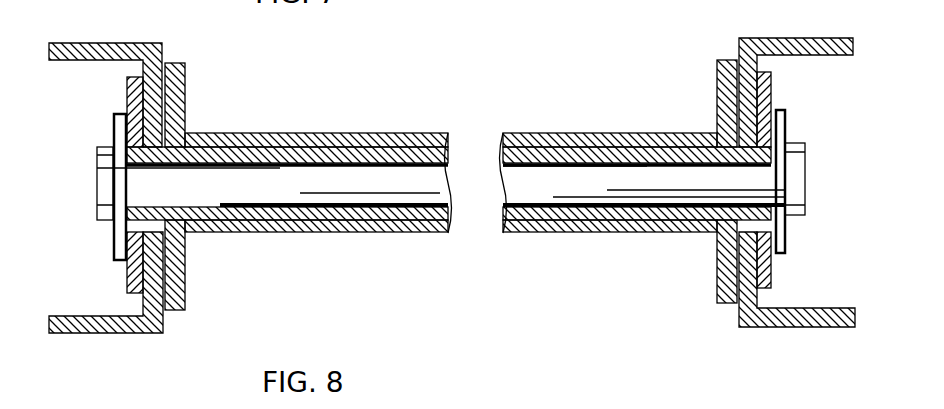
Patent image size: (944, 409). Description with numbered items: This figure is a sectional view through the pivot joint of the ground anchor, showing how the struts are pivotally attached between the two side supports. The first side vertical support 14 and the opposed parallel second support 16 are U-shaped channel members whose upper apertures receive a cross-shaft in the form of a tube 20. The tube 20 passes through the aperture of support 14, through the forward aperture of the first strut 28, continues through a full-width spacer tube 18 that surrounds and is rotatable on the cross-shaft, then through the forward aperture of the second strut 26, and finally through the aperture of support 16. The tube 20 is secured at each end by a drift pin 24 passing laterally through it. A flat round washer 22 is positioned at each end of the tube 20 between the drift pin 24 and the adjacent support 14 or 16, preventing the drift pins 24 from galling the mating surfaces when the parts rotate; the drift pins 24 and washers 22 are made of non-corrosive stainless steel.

The first side vertical support 14 is at (810, 38).
The second support 16 is at (90, 43).
The full-width spacer tube 18 is at (527, 133).
The cross-shaft 20 is at (103, 178).
The washer 22 is at (127, 86).
The drift pin 24 is at (121, 265).
The second strut 26 is at (186, 94).
The first strut 28 is at (717, 97).